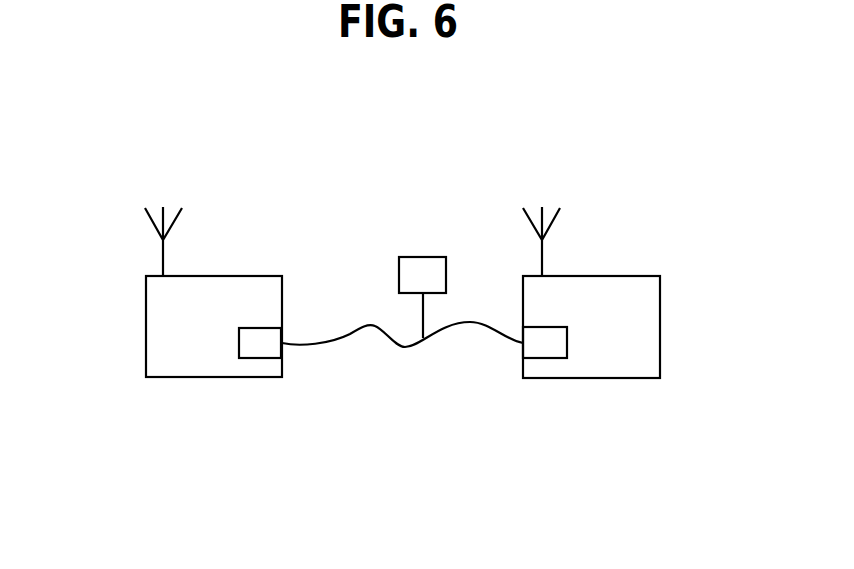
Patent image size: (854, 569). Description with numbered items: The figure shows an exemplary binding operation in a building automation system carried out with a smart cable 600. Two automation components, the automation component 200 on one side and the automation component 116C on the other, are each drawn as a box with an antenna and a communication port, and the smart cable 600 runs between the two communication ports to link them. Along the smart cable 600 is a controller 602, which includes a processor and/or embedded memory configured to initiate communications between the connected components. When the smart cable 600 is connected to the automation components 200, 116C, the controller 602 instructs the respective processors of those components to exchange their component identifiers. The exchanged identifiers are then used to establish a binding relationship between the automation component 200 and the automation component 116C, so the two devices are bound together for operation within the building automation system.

The automation component 200 is at (134, 329).
The smart cable 600 is at (394, 355).
The controller 602 is at (422, 297).
The automation component 116C is at (675, 328).